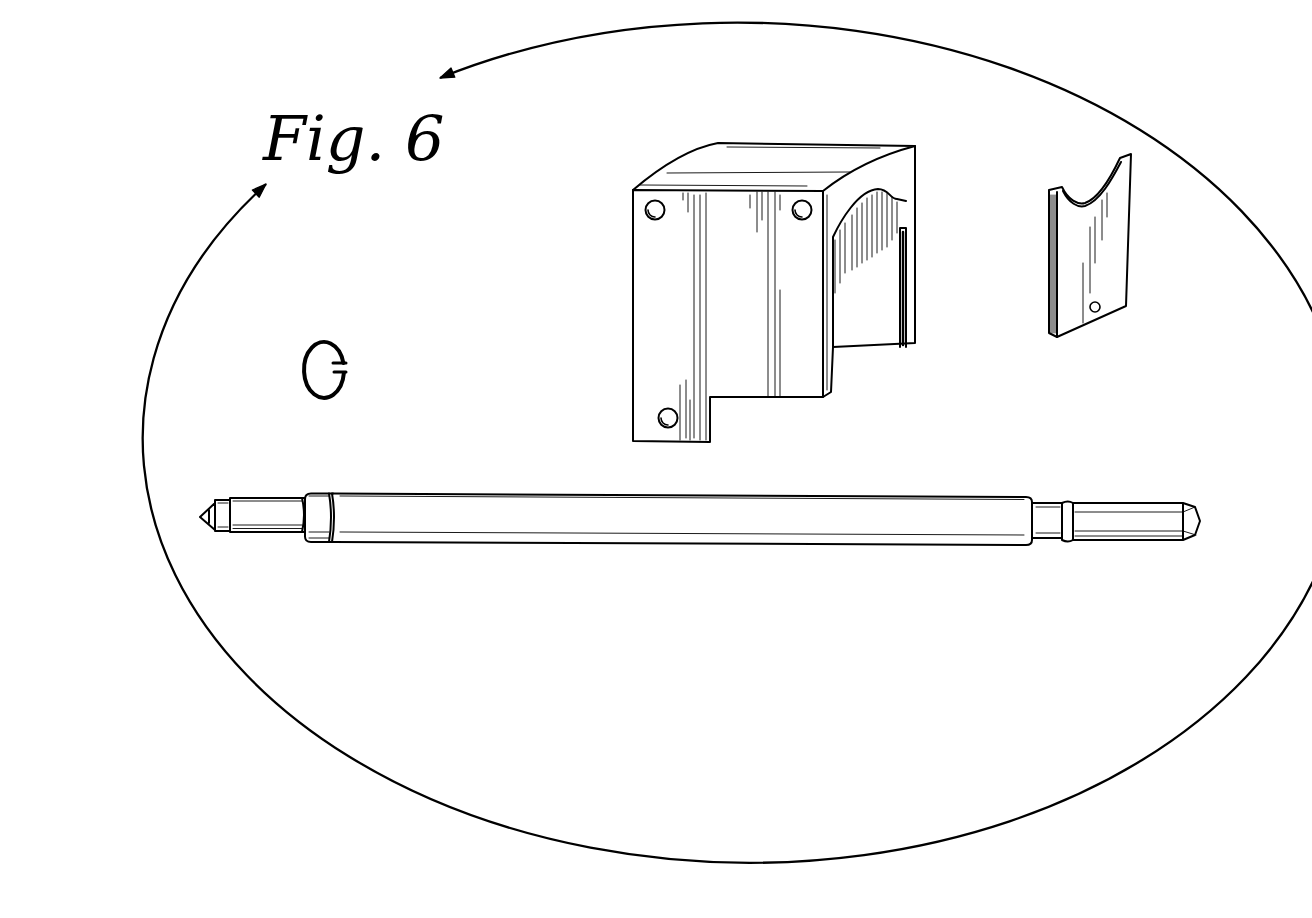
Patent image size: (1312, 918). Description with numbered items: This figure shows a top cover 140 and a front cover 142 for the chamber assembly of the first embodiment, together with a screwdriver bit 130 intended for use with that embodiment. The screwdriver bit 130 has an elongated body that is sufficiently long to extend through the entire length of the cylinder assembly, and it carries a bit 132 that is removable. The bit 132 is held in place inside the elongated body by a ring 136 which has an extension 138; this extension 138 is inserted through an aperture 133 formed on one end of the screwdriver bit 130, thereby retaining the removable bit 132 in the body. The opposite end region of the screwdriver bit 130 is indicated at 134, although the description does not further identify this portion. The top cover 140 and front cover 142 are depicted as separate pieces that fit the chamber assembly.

The screwdriver bit 130 is at (505, 520).
The bit 132 is at (268, 537).
The aperture 133 is at (323, 543).
The hex drive end 134 is at (1135, 543).
The ring 136 is at (324, 370).
The extension 138 is at (318, 388).
The top cover 140 is at (643, 253).
The front cover 142 is at (1112, 255).